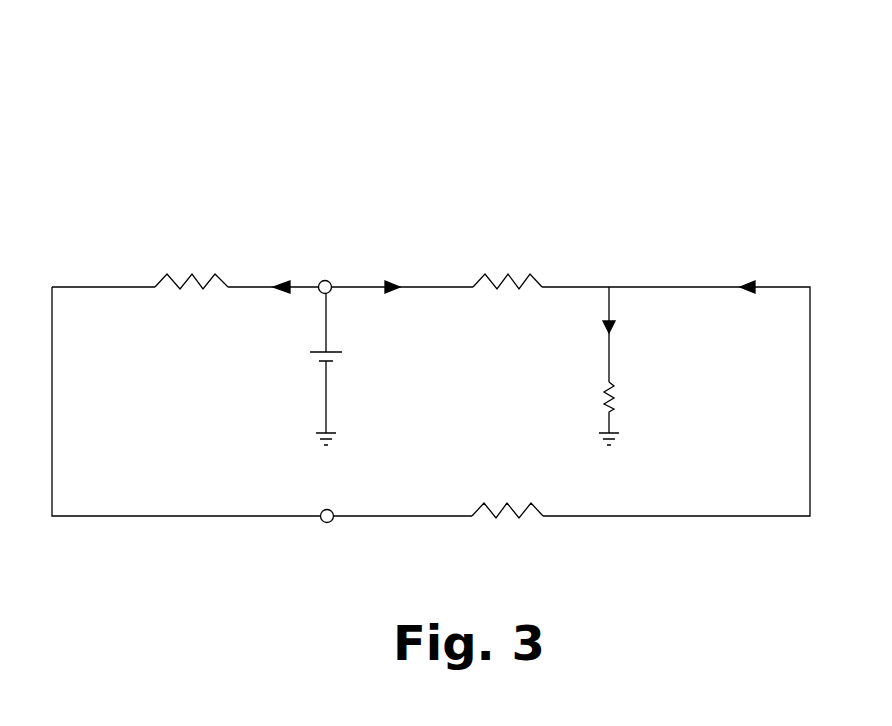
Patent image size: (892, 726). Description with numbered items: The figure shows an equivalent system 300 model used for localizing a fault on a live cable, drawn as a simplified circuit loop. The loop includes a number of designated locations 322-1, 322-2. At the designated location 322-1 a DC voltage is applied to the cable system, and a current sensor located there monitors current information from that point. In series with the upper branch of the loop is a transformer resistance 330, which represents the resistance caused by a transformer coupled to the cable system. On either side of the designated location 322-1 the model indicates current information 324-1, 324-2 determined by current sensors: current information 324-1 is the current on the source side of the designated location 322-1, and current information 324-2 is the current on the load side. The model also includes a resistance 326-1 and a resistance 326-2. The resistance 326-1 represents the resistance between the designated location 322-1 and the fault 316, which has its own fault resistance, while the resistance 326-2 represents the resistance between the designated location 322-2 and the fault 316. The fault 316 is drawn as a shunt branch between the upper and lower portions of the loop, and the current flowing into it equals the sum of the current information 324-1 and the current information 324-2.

The equivalent system model 300 is at (677, 68).
The transformer resistance 330 is at (195, 250).
The current information i_L 324-1 is at (295, 250).
The current information i_R 324-2 is at (405, 255).
The designated location 322-1 is at (325, 280).
The designated location 322-2 is at (331, 510).
The resistance R_x 326-1 is at (518, 250).
The resistance R_y 326-2 is at (522, 521).
The fault 316 is at (680, 375).